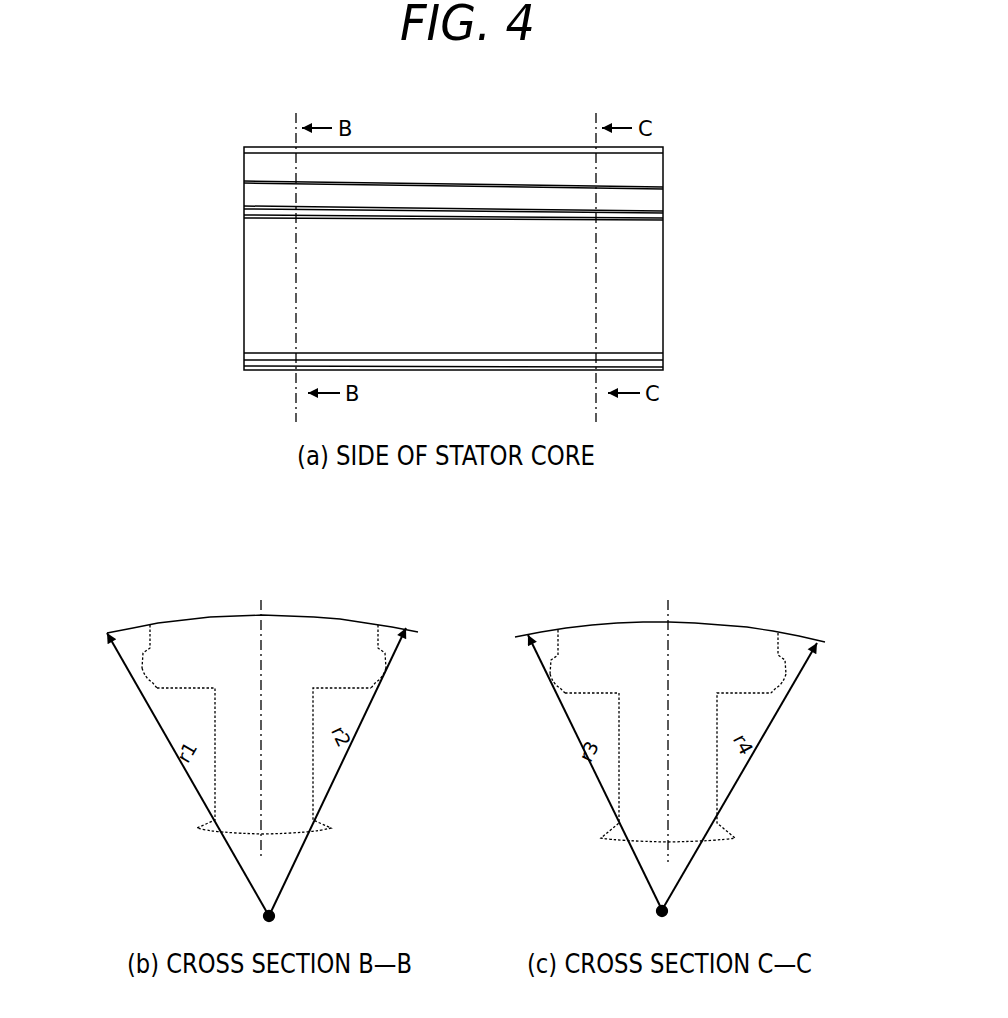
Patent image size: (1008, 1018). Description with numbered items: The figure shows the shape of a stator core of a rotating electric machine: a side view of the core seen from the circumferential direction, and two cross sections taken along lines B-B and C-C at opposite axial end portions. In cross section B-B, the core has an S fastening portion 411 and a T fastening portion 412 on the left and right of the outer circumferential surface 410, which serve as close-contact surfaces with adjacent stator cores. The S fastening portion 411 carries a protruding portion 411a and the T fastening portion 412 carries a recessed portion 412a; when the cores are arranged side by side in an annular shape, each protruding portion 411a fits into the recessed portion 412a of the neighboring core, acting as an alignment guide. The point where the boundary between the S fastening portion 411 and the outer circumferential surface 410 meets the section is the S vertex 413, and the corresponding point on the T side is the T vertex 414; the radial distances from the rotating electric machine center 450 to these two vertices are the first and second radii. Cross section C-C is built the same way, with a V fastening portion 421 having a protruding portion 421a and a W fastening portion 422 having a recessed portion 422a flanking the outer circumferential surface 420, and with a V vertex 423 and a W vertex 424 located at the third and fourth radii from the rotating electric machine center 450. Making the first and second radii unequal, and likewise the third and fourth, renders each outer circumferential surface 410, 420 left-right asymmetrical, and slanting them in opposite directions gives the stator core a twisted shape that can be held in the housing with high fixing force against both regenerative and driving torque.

The outer circumferential surface 410 is at (283, 614).
The S fastening portion 411 is at (143, 650).
The protruding portion 411a is at (148, 680).
The T fastening portion 412 is at (383, 650).
The recessed portion 412a is at (380, 677).
The S vertex 413 is at (150, 623).
The T vertex 414 is at (378, 628).
The outer circumferential surface 420 is at (675, 622).
The V fastening portion 421 is at (552, 652).
The protruding portion 421a is at (556, 680).
The W fastening portion 422 is at (796, 658).
The recessed portion 422a is at (790, 686).
The V vertex 423 is at (557, 630).
The W vertex 424 is at (784, 636).
The rotating electric machine center 450 is at (275, 915).